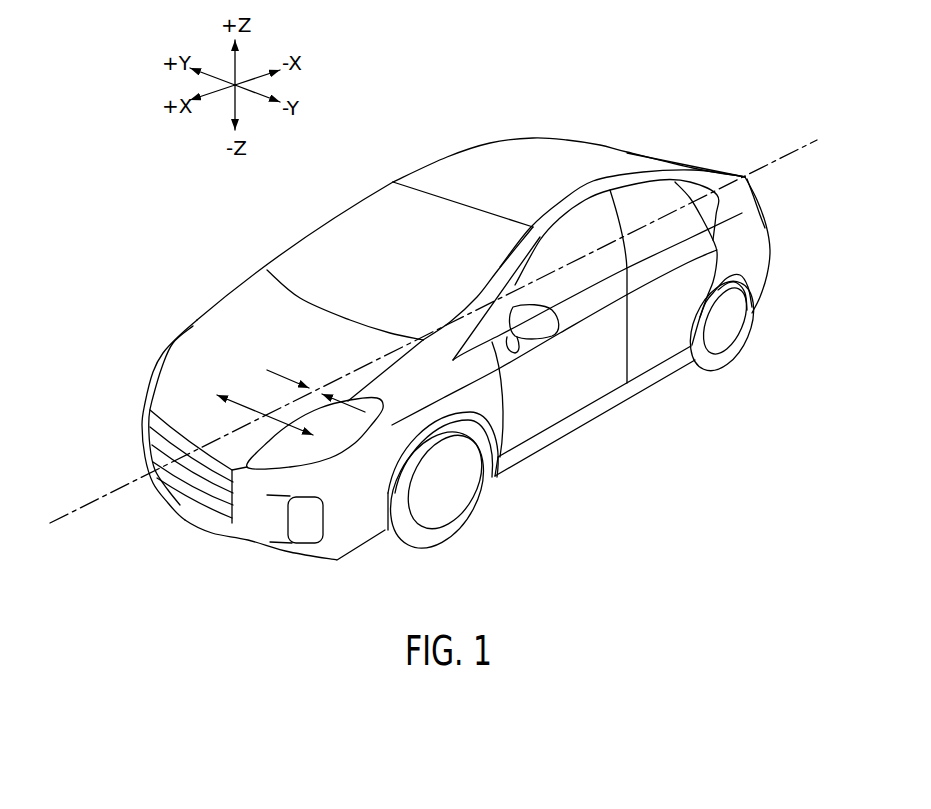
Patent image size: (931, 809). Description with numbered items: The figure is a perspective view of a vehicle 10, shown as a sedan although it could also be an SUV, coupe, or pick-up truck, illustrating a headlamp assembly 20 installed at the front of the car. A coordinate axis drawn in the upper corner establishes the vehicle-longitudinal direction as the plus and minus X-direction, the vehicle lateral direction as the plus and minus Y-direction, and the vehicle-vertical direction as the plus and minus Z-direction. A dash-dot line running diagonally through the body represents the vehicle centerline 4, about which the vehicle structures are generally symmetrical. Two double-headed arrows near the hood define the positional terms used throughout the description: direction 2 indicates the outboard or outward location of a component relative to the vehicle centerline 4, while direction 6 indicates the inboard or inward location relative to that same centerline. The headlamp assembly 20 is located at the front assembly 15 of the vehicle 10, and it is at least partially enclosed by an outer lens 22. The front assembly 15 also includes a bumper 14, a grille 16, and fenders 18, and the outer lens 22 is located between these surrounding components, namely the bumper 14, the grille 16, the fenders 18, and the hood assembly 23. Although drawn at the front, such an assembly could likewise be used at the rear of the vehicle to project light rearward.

The vehicle 10 is at (723, 88).
The vehicle centerline 4 is at (812, 142).
The outboard direction 2 is at (239, 404).
The inboard direction 6 is at (268, 370).
The bumper 14 is at (243, 527).
The front assembly 15 is at (128, 378).
The grille 16 is at (202, 485).
The fenders 18 is at (184, 322).
The headlamp assembly 20 is at (173, 333).
The outer lens 22 is at (163, 358).
The hood assembly 23 is at (243, 312).